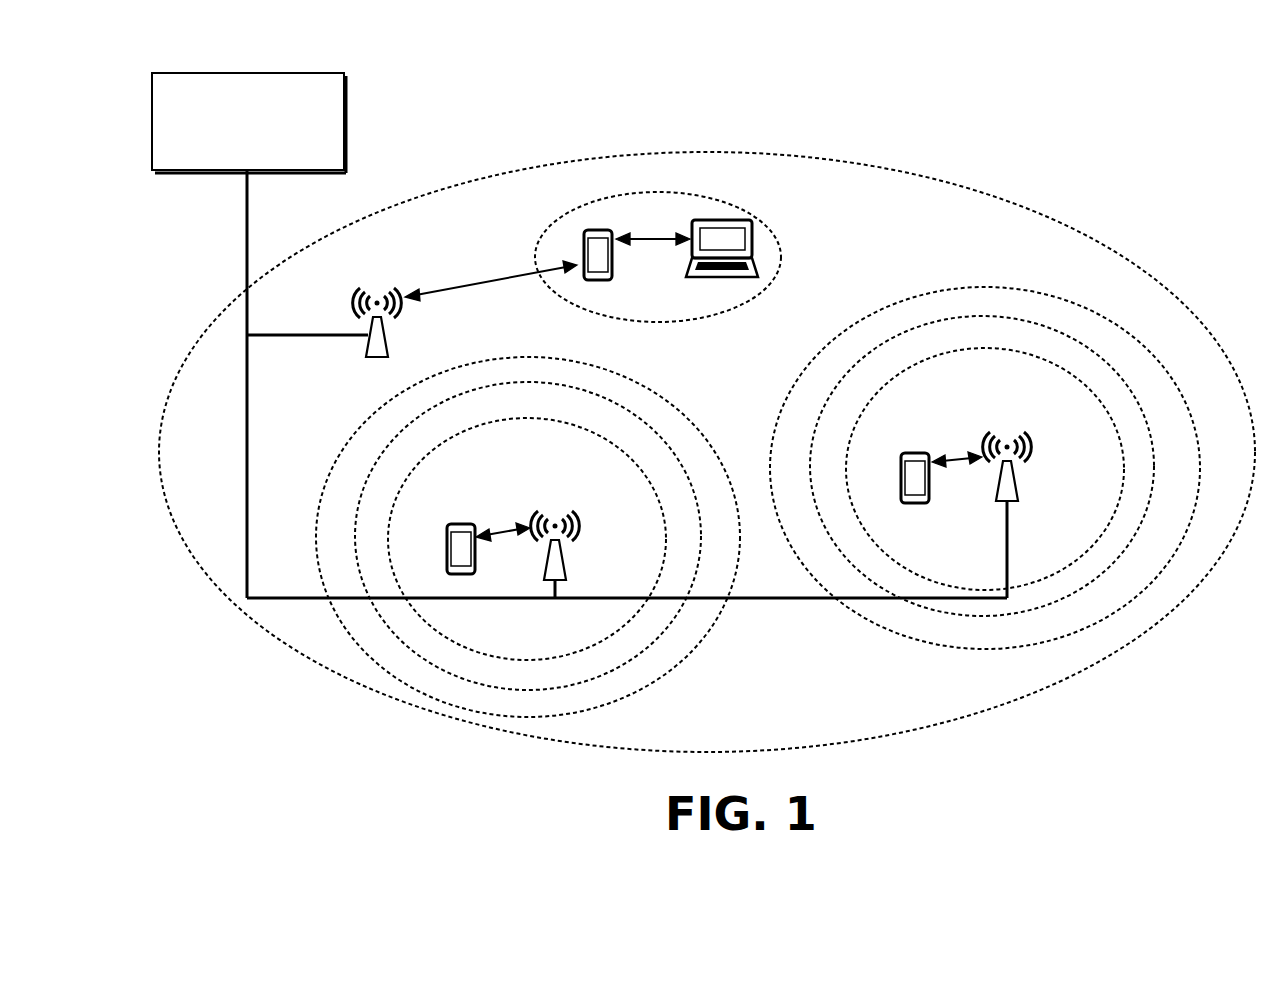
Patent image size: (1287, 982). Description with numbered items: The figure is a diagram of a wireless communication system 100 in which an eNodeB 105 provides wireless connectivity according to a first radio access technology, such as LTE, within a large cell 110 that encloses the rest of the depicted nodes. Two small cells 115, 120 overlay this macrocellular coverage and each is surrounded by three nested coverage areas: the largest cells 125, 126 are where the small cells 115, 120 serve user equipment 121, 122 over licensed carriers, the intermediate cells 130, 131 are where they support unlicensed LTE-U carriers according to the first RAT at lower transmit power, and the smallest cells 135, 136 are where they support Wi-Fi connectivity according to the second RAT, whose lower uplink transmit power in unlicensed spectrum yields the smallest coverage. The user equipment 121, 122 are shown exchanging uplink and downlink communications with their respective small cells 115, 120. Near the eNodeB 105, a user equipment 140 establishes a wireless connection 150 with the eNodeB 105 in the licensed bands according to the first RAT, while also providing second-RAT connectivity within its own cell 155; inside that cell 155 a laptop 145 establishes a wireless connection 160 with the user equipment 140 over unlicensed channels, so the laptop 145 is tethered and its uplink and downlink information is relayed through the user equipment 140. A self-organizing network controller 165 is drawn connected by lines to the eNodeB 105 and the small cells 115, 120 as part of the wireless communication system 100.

The wireless communication system 100 is at (1140, 86).
The eNodeB 105 is at (373, 360).
The cell 110 is at (428, 707).
The small cell 115 is at (568, 572).
The small cell 120 is at (1020, 490).
The user equipment 121 is at (898, 487).
The user equipment 122 is at (440, 562).
The cell 125 is at (841, 335).
The cell 126 is at (345, 450).
The cell 130 is at (840, 380).
The cell 131 is at (360, 498).
The cell 135 is at (850, 430).
The cell 136 is at (388, 547).
The user equipment 140 is at (598, 230).
The laptop 145 is at (722, 280).
The wireless connection 150 is at (456, 272).
The cell 155 is at (782, 252).
The wireless connection 160 is at (668, 243).
The self-organizing network (SON) controller 165 is at (249, 123).